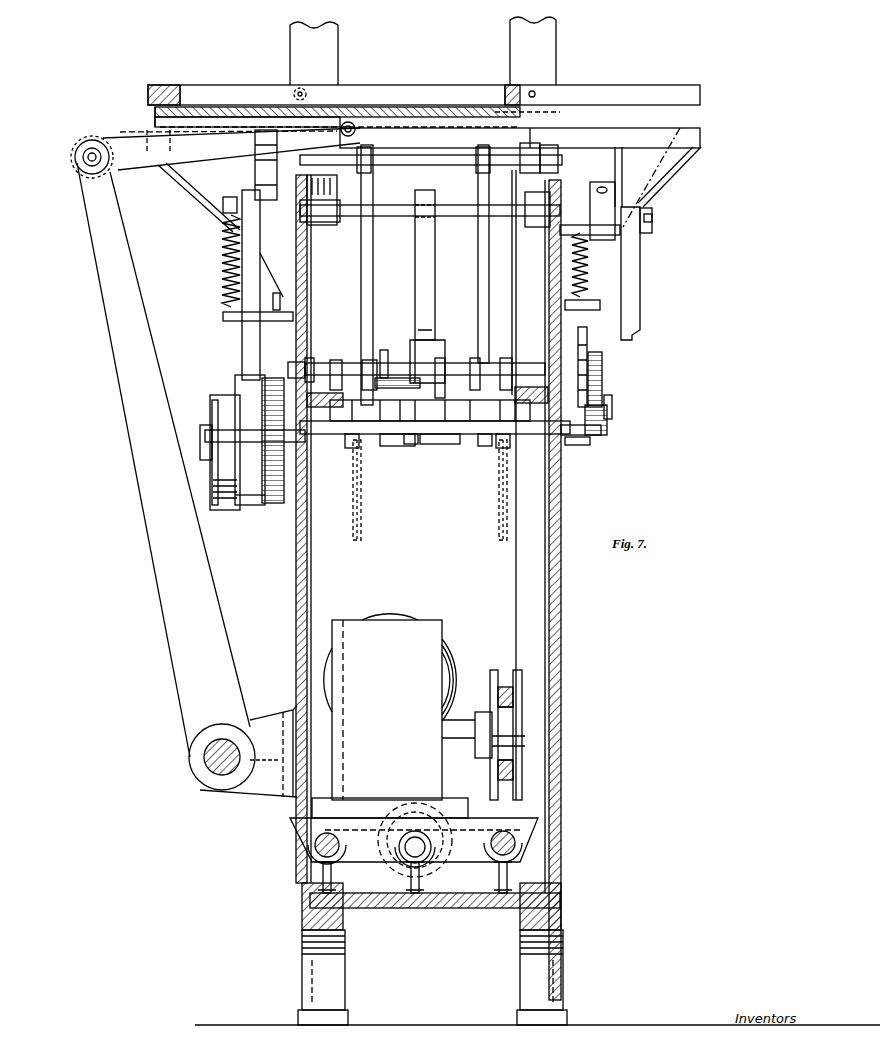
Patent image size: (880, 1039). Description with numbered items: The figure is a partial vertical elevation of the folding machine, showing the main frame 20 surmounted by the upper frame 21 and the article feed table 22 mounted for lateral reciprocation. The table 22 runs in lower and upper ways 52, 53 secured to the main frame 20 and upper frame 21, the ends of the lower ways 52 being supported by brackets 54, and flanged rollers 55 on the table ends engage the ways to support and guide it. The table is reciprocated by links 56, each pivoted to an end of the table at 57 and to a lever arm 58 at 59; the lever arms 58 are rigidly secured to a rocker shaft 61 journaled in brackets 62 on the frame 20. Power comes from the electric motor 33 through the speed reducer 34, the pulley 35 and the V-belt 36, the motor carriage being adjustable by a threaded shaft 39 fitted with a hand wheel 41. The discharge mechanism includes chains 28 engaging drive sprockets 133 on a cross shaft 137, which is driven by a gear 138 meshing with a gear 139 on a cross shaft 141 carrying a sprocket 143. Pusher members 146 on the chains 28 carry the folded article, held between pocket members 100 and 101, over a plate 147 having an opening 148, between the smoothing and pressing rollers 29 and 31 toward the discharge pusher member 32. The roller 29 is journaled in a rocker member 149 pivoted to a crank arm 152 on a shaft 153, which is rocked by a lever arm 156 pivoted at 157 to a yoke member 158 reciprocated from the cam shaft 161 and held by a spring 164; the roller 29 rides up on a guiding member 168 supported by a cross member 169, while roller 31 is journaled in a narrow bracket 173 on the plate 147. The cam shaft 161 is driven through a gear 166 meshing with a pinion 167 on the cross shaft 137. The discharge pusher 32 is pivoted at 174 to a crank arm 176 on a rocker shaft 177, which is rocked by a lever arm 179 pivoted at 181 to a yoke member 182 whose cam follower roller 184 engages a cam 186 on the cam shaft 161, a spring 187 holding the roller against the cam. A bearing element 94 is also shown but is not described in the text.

The main frame 20 is at (563, 645).
The upper frame 21 is at (553, 56).
The article feed table 22 is at (153, 113).
The discharge chains 28 is at (362, 520).
The smoothing roller 29 is at (445, 365).
The pressing roller 31 is at (472, 437).
The discharge pusher member 32 is at (385, 375).
The electric motor 33 is at (454, 660).
The speed reducer 34 is at (440, 620).
The pulley 35 is at (522, 710).
The V-belt 36 is at (516, 670).
The threaded shaft 39 is at (400, 860).
The hand wheel 41 is at (437, 862).
The lower ways 52 is at (668, 130).
The upper ways 53 is at (650, 87).
The brackets 54 is at (190, 194).
The flanged rollers 55 is at (160, 126).
The links 56 is at (138, 170).
The pivot 57 is at (351, 122).
The lever arm 58 is at (103, 310).
The pivot 59 is at (85, 165).
The rocker shaft 61 is at (215, 765).
The brackets 62 is at (258, 798).
The bearing 94 is at (335, 184).
The pocket member 100 is at (395, 365).
The pocket member 101 is at (393, 440).
The drive sprockets 133 is at (340, 440).
The cross shaft 137 is at (410, 444).
The gear 138 is at (593, 437).
The gear 139 is at (604, 365).
The cross shaft 141 is at (604, 395).
The sprocket 143 is at (586, 345).
The pusher members 146 is at (347, 365).
The plate 147 is at (296, 372).
The opening 148 is at (350, 358).
The rocker member 149 is at (438, 330).
The crank arm 152 is at (435, 268).
The shaft 153 is at (398, 218).
The lever arm 156 is at (612, 185).
The pivot 157 is at (655, 222).
The yoke member 158 is at (642, 300).
The cam shaft 161 is at (486, 444).
The spring 164 is at (586, 275).
The gear 166 is at (272, 505).
The pinion 167 is at (245, 380).
The guiding member 168 is at (477, 355).
The cross member 169 is at (312, 359).
The narrow bracket 173 is at (425, 440).
The pivot 174 is at (485, 365).
The crank arm 176 is at (373, 299).
The rocker shaft 177 is at (408, 169).
The lever arm 179 is at (258, 182).
The pivot 181 is at (232, 212).
The yoke member 182 is at (242, 330).
The cam follower roller 184 is at (212, 400).
The cam 186 is at (230, 510).
The spring 187 is at (224, 269).